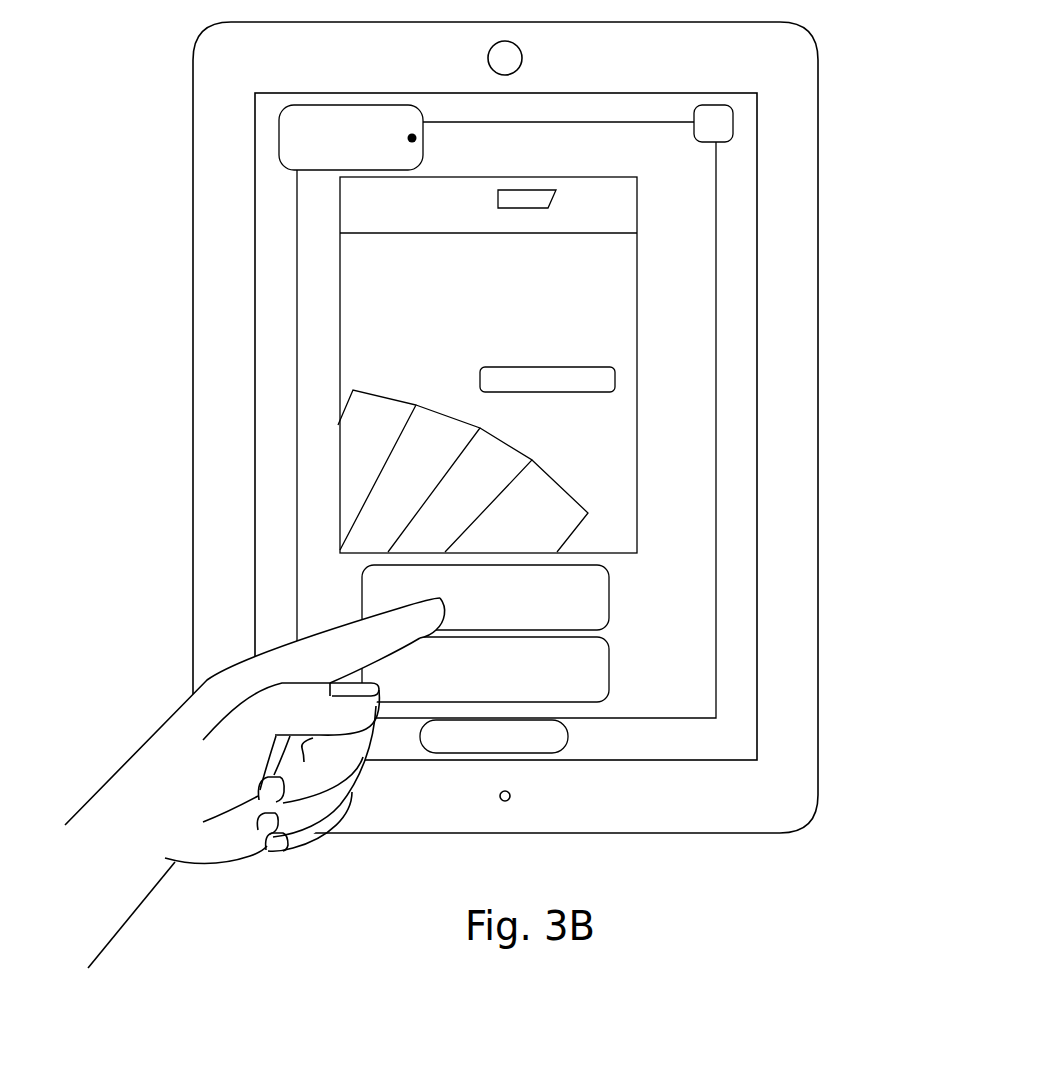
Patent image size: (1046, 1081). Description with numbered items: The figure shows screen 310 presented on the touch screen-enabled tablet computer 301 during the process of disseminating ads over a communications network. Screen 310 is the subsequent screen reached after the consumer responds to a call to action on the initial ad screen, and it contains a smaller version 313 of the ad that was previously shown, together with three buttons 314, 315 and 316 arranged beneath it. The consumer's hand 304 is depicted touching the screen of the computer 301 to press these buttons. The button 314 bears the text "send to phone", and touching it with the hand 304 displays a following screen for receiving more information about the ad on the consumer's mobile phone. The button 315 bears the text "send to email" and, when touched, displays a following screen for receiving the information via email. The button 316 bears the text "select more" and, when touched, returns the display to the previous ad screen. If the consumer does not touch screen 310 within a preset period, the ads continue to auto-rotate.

The touch screen-enabled tablet computer 301 is at (207, 187).
The hand 304 is at (152, 748).
The screen 310 is at (362, 333).
The smaller version of the ad 313 is at (585, 372).
The send to phone button 314 is at (588, 618).
The send to email button 315 is at (582, 693).
The select more button 316 is at (555, 740).